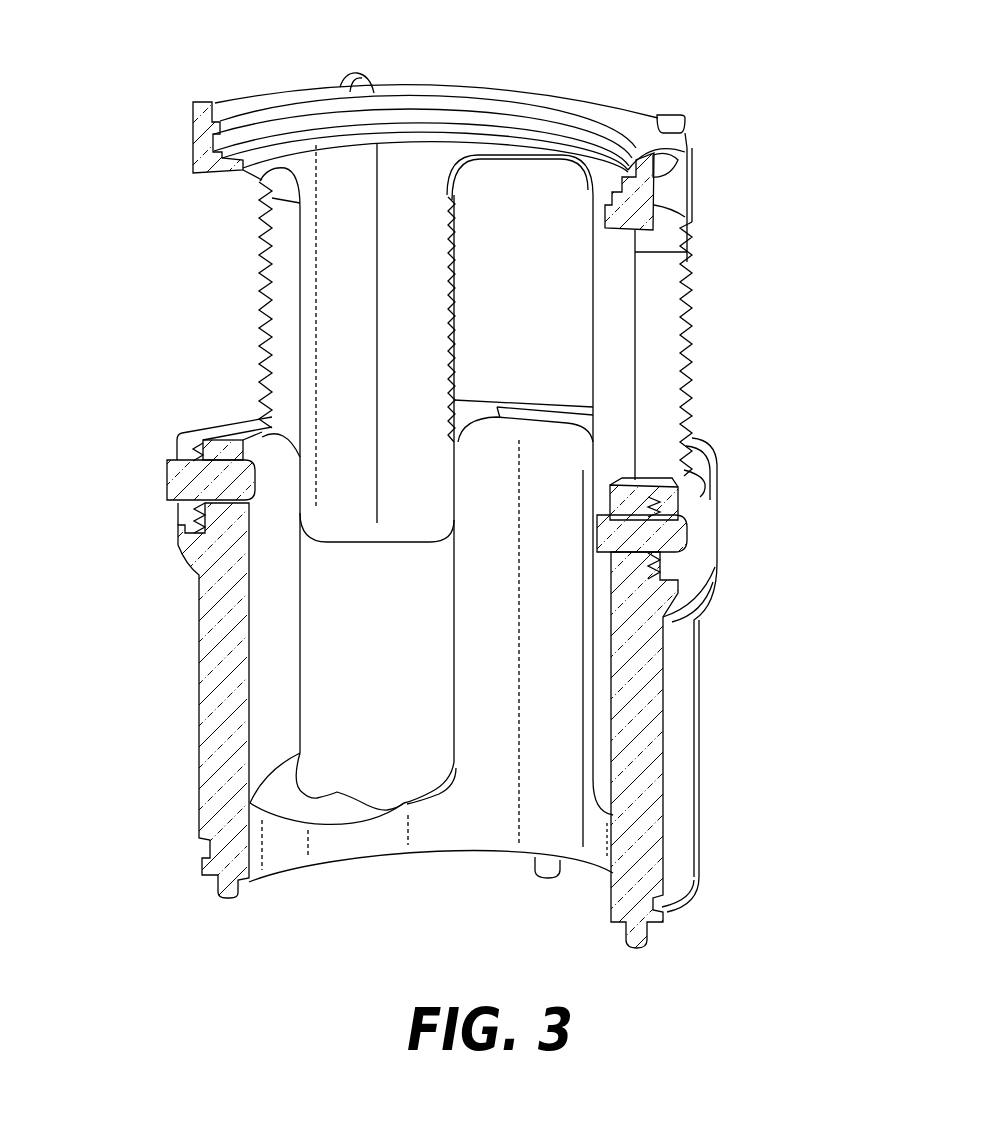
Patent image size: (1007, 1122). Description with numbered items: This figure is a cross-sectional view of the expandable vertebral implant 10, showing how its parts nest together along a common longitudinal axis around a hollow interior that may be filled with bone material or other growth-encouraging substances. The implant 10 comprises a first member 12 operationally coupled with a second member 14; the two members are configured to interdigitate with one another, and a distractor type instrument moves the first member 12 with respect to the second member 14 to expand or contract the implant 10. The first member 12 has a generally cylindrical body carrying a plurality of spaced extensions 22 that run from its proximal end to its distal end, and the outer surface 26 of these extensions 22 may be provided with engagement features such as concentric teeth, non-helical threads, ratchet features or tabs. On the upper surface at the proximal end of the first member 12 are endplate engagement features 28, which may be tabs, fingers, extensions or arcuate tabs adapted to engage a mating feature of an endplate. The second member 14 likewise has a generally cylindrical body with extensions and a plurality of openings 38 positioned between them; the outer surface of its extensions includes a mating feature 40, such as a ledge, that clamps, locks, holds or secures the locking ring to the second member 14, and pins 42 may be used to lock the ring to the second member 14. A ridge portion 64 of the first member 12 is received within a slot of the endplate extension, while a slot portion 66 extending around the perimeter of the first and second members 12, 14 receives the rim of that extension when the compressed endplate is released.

The expandable vertebral implant 10 is at (705, 58).
The first member 12 is at (728, 276).
The second member 14 is at (737, 701).
The plurality of extensions 22 is at (437, 273).
The outer surface 26 is at (690, 330).
The endplate engagement features 28 is at (549, 85).
The plurality of openings 38 is at (315, 703).
The mating feature 40 is at (183, 529).
The pins 42 is at (690, 512).
The ridge portion 64 is at (633, 170).
The slot portion 66 is at (645, 193).